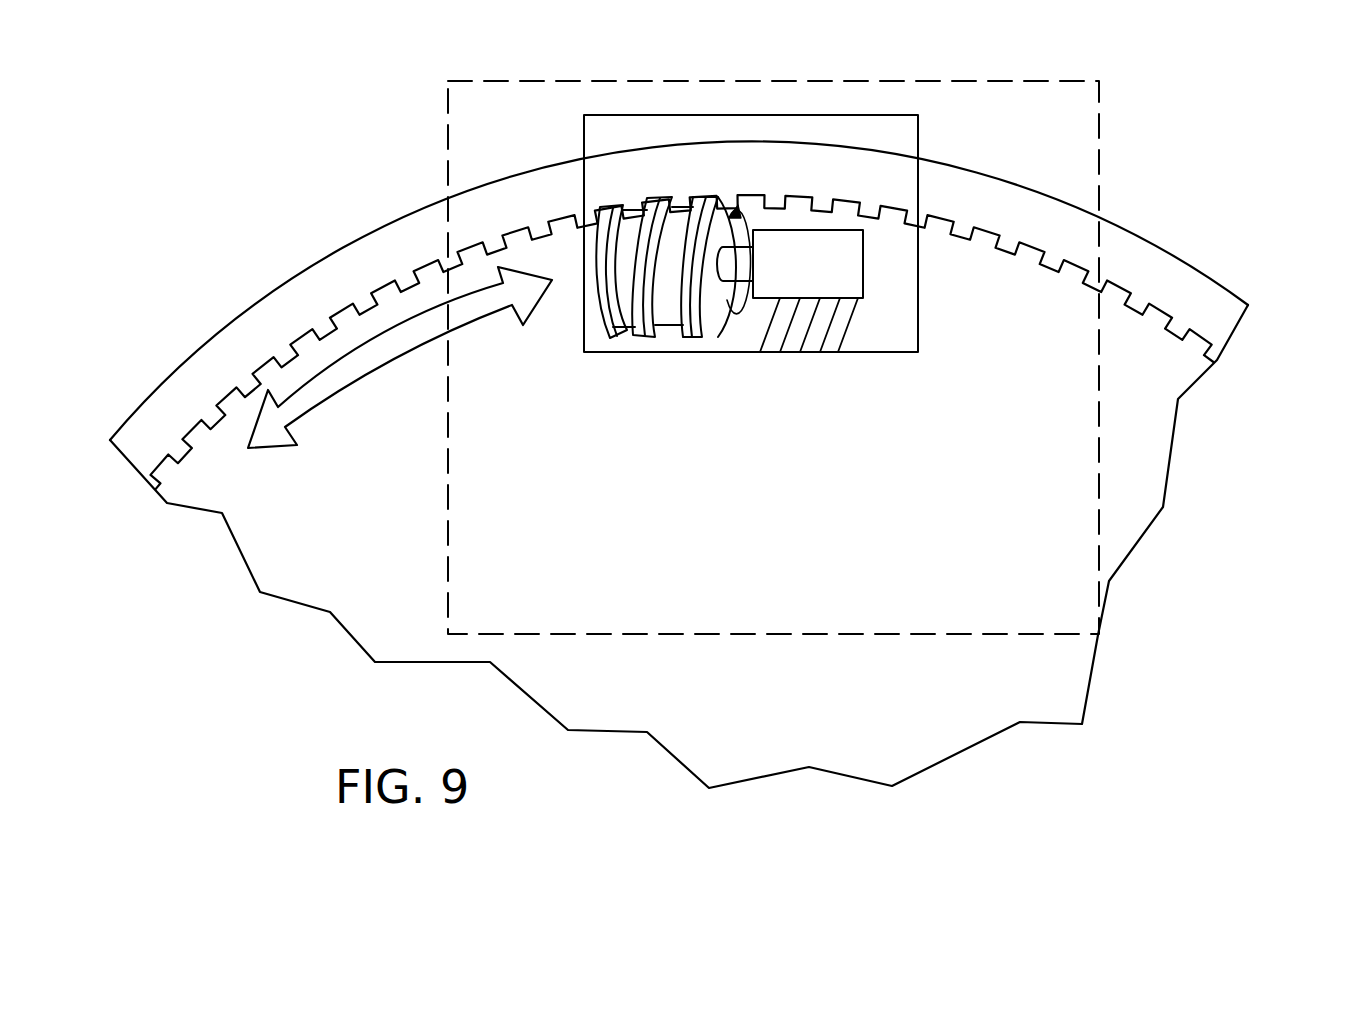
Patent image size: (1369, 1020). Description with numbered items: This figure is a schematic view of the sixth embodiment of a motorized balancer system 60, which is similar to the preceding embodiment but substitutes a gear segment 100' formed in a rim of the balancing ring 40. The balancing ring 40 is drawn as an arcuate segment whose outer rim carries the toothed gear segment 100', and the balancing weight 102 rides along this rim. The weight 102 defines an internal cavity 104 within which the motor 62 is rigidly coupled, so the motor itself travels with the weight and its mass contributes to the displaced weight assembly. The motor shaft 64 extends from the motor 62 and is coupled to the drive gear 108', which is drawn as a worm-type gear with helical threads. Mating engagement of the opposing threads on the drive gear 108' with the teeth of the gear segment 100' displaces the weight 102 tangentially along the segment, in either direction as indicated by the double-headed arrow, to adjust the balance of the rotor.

The balancing ring 40 is at (217, 317).
The gear segment 100' is at (682, 295).
The motorized balancer system 60 is at (1122, 145).
The weight 102 is at (920, 337).
The internal cavity 104 is at (877, 273).
The motor 62 is at (830, 268).
The drive gear 108' is at (657, 362).
The motor shaft 64 is at (730, 293).